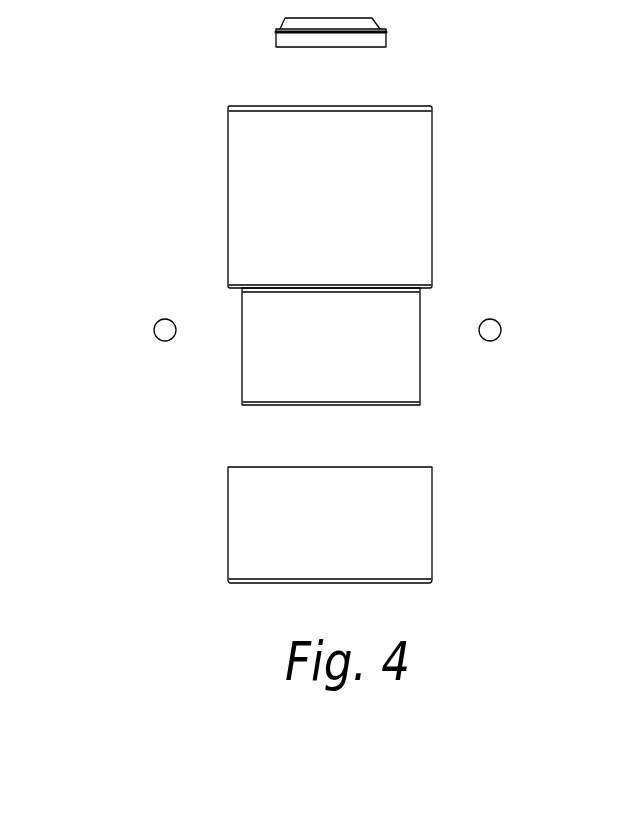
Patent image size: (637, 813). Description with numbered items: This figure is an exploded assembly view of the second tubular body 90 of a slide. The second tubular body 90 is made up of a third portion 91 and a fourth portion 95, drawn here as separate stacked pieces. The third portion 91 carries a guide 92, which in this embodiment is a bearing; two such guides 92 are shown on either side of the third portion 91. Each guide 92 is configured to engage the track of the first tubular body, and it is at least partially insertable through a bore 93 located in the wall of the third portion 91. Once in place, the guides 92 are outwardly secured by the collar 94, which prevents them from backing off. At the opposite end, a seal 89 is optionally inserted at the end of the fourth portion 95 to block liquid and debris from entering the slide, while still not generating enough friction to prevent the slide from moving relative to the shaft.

The seal 89 is at (302, 16).
The second tubular body 90 is at (146, 26).
The third portion 91 is at (498, 287).
The guide 92 is at (154, 322).
The bore 93 is at (228, 333).
The collar 94 is at (418, 553).
The fourth portion 95 is at (217, 105).